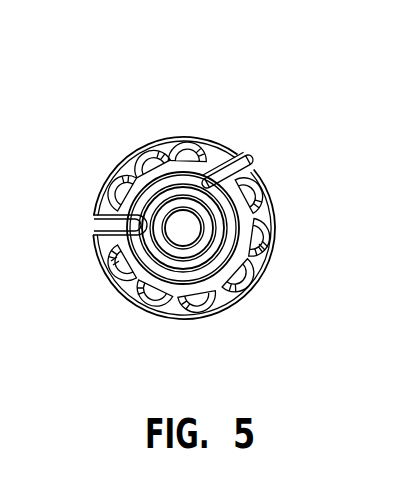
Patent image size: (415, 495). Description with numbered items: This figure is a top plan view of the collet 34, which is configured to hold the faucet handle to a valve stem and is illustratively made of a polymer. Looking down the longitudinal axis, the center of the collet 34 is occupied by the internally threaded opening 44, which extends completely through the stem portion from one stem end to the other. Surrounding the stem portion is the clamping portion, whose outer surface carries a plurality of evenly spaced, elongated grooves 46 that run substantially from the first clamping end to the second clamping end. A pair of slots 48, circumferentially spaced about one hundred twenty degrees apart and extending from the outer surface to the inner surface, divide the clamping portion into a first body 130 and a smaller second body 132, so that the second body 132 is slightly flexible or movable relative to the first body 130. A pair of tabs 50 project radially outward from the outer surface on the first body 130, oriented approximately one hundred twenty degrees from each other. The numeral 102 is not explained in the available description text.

The collet 34 is at (284, 289).
The threaded opening 44 is at (183, 233).
The grooves 46 is at (190, 138).
The slots 48 is at (133, 227).
The tabs 50 is at (275, 210).
The first body 130 is at (268, 160).
The second body 132 is at (220, 158).
The housing 102 is at (0, 440).